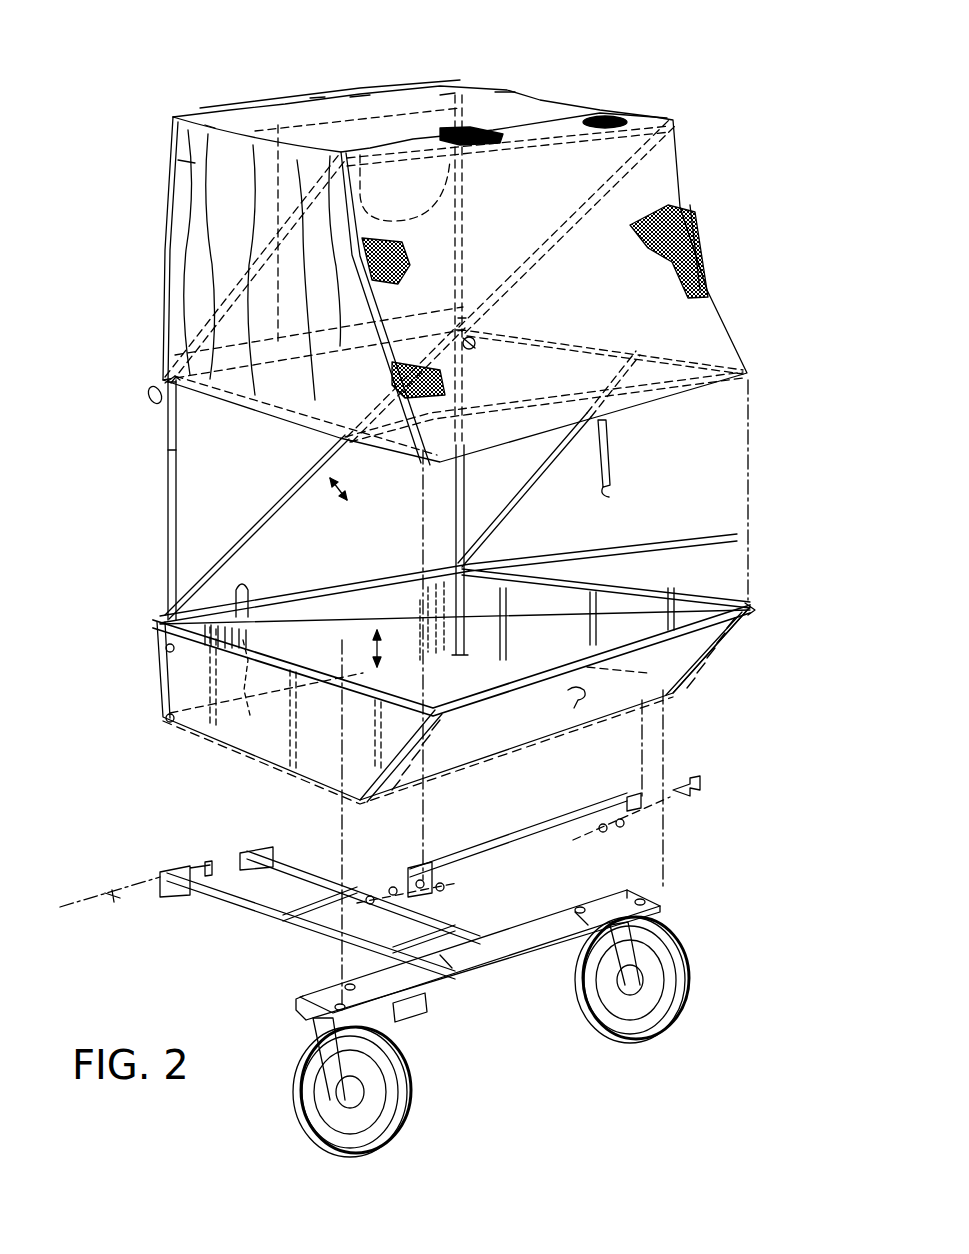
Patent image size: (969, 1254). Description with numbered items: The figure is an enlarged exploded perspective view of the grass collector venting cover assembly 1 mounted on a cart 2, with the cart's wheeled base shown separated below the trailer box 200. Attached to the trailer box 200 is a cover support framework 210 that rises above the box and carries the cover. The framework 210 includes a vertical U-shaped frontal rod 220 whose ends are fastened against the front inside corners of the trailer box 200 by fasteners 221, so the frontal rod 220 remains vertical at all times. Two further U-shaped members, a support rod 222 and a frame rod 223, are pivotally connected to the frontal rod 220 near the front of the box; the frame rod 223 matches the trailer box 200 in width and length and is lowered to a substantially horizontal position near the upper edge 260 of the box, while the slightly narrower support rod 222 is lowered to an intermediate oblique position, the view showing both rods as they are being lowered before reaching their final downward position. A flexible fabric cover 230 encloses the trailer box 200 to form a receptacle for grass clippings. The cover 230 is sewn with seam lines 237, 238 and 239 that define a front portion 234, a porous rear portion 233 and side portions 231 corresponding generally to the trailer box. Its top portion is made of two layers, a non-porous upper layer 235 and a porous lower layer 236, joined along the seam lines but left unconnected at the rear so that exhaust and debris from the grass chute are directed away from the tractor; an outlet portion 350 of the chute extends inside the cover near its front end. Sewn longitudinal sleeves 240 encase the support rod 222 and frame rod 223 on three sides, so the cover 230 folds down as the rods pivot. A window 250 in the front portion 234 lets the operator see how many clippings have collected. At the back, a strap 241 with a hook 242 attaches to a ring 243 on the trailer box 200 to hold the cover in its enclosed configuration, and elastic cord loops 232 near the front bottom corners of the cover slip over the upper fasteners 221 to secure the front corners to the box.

The cover assembly 1 is at (702, 190).
The wheeled dolly 2 is at (717, 690).
The trailer box 200 is at (240, 752).
The cover support framework 210 is at (165, 506).
The frontal rod 220 is at (165, 448).
The fasteners 221 is at (165, 648).
The support rod 222 is at (263, 520).
The frame rod 223 is at (622, 548).
The cover 230 is at (166, 258).
The side portions 231 is at (182, 215).
The elastic cord loops 232 is at (148, 397).
The rear portion 233 is at (695, 320).
The front portion 234 is at (193, 163).
The upper layer 235 is at (530, 115).
The lower layer 236 is at (625, 115).
The seam line 237 is at (210, 128).
The seam line 238 is at (360, 95).
The seam line 239 is at (505, 90).
The sleeves 240 is at (205, 305).
The strap 241 is at (612, 450).
The hook 242 is at (616, 499).
The ring 243 is at (580, 704).
The window 250 is at (318, 170).
The upper edge 260 is at (752, 612).
The outlet portion 350 is at (450, 78).